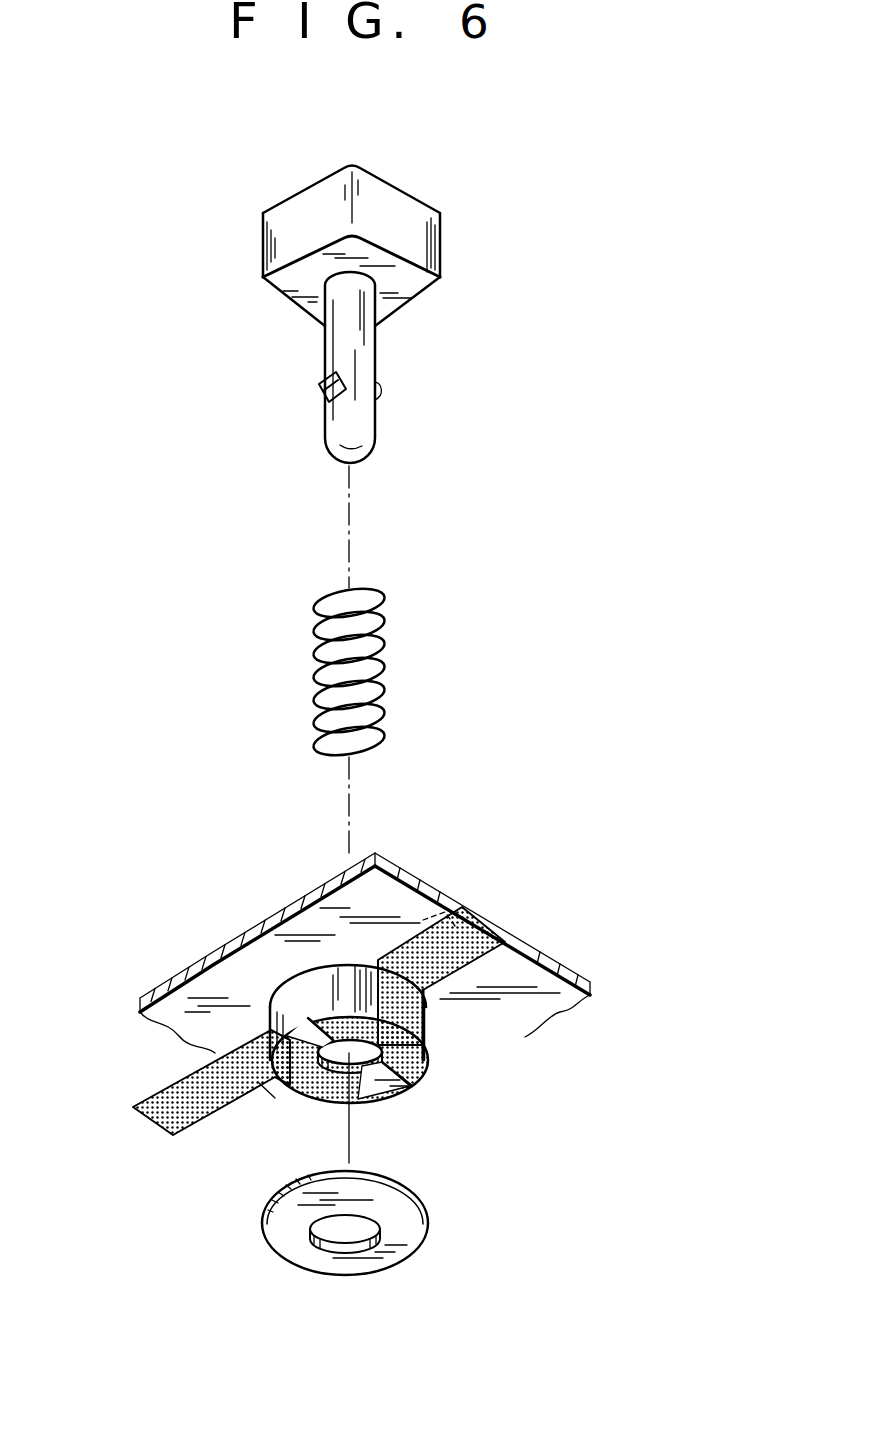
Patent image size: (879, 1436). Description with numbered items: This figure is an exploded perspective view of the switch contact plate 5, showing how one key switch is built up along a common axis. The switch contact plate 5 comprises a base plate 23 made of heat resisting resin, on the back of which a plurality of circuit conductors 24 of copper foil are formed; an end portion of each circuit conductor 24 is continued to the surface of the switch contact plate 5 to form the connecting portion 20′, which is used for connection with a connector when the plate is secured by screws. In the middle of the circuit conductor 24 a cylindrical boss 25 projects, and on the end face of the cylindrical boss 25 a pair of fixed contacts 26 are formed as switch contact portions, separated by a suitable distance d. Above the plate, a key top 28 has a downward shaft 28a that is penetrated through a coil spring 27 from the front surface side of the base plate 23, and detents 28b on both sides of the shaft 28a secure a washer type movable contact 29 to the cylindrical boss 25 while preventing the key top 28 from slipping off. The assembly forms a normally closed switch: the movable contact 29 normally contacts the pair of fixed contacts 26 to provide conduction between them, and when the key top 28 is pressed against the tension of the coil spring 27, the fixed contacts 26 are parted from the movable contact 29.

The switch contact plate 5 is at (389, 925).
The connecting portion 20′ is at (423, 920).
The base plate 23 is at (537, 953).
The circuit conductor 24 is at (457, 970).
The cylindrical boss 25 is at (310, 988).
The fixed contacts 26 is at (369, 1095).
The coil spring 27 is at (392, 670).
The key top 28 is at (374, 315).
The downward shaft 28a is at (333, 353).
The detents 28b is at (380, 385).
The washer type movable contact 29 is at (428, 1228).
The distance d is at (393, 1087).